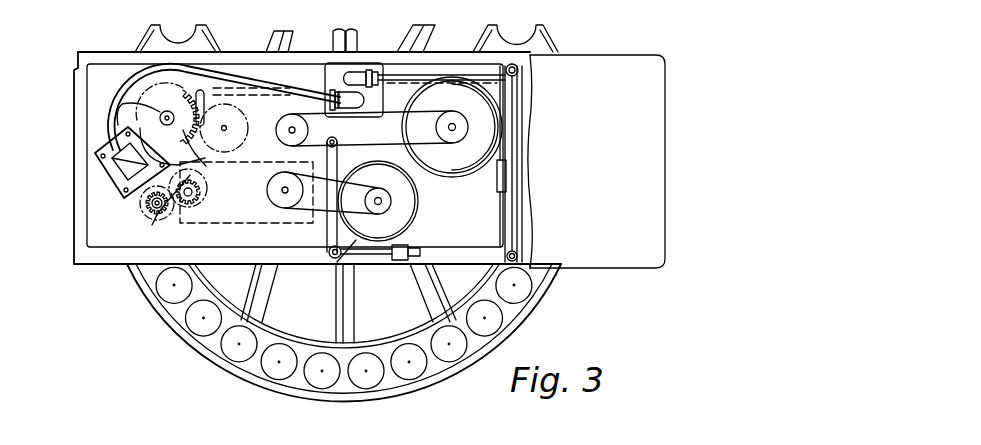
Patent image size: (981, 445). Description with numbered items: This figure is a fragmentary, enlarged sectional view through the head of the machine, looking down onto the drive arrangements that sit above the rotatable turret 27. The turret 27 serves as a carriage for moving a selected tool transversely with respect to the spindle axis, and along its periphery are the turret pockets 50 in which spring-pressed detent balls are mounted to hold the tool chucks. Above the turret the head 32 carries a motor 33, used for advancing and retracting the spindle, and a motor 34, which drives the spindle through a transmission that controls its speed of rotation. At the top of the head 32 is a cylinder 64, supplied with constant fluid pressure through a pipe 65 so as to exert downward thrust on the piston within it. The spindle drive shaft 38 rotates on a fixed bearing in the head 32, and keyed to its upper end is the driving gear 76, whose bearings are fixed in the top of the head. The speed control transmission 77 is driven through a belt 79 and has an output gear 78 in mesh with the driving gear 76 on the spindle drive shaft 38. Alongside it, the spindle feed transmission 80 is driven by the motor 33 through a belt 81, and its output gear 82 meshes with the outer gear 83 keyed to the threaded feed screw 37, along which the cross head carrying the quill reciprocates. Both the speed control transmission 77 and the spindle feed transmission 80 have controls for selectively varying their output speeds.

The rotatable turret 27 is at (533, 306).
The head 32 is at (627, 258).
The motor 33 is at (396, 220).
The motor 34 is at (462, 162).
The threaded feed screw 37 is at (150, 202).
The spindle drive shaft 38 is at (165, 115).
The turret pocket 50 is at (227, 345).
The cylinder 64 is at (124, 162).
The pipe 65 is at (118, 112).
The driving gear 76 is at (180, 112).
The speed control transmission 77 is at (283, 108).
The output gear 78 is at (203, 119).
The belt 79 is at (386, 143).
The spindle feed transmission 80 is at (238, 205).
The belt 81 is at (323, 216).
The output gear 82 is at (203, 185).
The outer gear 83 is at (163, 218).